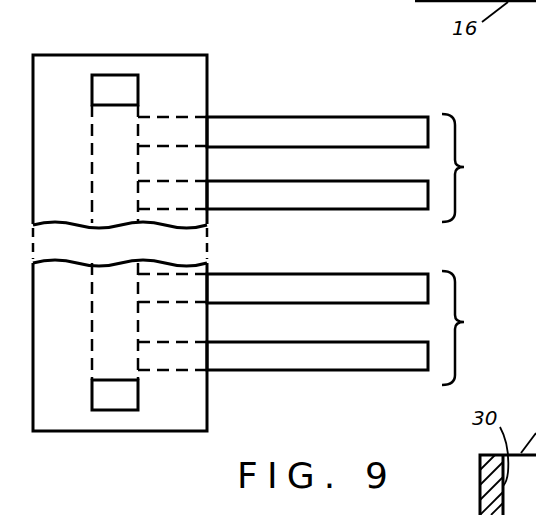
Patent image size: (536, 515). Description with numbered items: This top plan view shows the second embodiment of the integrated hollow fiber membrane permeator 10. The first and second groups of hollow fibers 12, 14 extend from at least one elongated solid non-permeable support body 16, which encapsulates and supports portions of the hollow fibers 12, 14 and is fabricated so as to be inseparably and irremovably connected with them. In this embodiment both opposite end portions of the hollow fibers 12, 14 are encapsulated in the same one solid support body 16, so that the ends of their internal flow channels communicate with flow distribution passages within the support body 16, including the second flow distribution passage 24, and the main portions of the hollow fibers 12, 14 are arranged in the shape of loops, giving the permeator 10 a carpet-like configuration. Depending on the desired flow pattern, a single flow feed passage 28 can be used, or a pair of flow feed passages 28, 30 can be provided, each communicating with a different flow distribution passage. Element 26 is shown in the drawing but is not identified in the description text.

The integrated hollow fiber membrane permeator 10 is at (278, 74).
The first group of hollow fibers 12 is at (464, 167).
The second group of hollow fibers 14 is at (463, 322).
The elongated solid non-permeable support body 16 is at (212, 416).
The second flow distribution passage 24 is at (90, 293).
The contact lead 26 is at (92, 86).
The flow feed passage 28 is at (92, 398).
The flow feed passage 30 is at (133, 98).